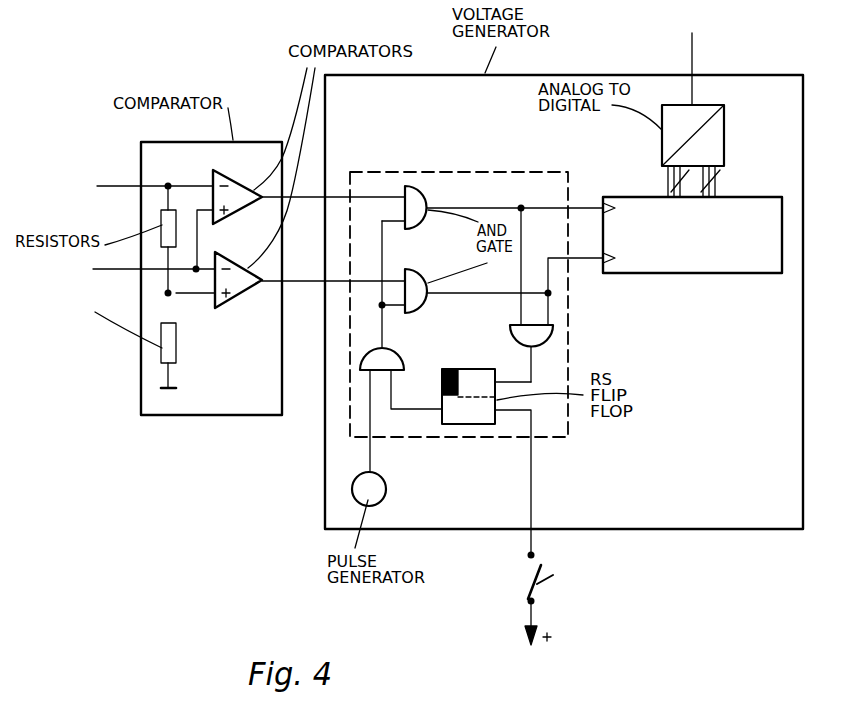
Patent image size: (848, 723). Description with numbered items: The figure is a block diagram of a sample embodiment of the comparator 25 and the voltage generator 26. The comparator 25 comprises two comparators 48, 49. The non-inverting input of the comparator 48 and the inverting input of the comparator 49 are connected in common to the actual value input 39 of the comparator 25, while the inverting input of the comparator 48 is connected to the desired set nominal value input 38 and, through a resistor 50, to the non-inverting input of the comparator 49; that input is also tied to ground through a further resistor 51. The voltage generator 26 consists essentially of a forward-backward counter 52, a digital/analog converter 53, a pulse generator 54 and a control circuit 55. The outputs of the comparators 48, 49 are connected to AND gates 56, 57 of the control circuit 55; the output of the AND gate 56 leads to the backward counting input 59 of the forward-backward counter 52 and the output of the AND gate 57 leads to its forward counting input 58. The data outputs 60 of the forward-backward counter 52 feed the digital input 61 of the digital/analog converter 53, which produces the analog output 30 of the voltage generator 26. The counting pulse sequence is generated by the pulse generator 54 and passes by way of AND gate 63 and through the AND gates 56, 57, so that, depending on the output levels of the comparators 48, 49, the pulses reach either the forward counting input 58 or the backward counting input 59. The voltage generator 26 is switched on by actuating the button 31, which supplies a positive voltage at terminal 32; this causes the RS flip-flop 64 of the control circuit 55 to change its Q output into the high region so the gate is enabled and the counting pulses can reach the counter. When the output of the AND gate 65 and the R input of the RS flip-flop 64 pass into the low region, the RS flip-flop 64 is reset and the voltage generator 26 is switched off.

The comparator 25 is at (222, 410).
The voltage generator 26 is at (710, 513).
The analog output 30 is at (690, 72).
The button 31 is at (530, 579).
The terminal 32 is at (539, 530).
The desired set nominal value input 38 is at (139, 186).
The actual value input 39 is at (138, 273).
The comparator 48 is at (243, 187).
The comparator 49 is at (260, 292).
The resistor 50 is at (170, 226).
The further resistor 51 is at (176, 350).
The forward-backward counter 52 is at (720, 268).
The digital/analog converter 53 is at (718, 125).
The pulse generator 54 is at (382, 490).
The control circuit 55 is at (405, 172).
The AND gate 56 is at (428, 199).
The AND gate 57 is at (421, 287).
The forward counting input 58 is at (600, 262).
The backward counting input 59 is at (599, 206).
The data outputs 60 is at (705, 186).
The digital input 61 is at (682, 178).
The AND gate 63 is at (386, 362).
The RS flip-flop 64 is at (467, 380).
The AND gate 65 is at (522, 333).